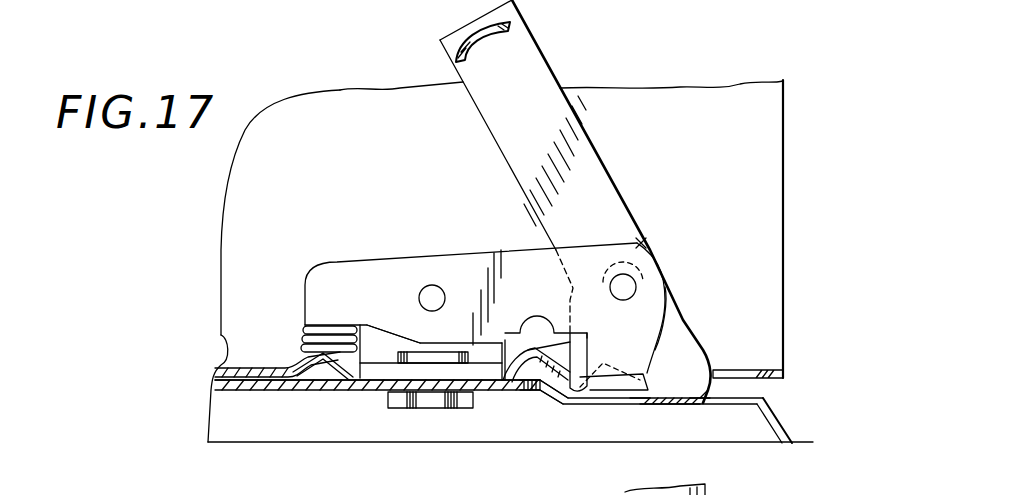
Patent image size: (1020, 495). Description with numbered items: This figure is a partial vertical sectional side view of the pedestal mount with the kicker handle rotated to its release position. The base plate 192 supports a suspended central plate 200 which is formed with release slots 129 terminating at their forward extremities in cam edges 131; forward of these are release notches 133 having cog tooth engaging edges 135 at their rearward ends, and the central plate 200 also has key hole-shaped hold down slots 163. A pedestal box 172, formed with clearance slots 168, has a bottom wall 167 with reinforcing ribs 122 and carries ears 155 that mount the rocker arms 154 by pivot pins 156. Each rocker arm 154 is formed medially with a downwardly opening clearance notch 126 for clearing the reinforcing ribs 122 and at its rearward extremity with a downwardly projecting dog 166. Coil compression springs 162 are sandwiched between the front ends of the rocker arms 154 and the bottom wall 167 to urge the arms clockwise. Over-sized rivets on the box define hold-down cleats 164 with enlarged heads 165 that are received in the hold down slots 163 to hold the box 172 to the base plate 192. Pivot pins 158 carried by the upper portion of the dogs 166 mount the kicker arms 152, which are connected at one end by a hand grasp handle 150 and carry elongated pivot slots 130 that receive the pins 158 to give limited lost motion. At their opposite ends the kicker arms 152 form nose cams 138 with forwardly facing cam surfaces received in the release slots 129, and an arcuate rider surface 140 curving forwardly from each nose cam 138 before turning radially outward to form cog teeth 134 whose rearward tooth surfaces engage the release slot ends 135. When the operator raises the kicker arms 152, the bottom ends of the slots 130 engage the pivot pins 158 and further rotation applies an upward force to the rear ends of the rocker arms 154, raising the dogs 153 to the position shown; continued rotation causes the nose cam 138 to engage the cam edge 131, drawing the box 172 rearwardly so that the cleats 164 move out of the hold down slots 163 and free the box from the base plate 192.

The reinforcing ribs 122 is at (577, 348).
The clearance notches 126 is at (537, 316).
The release slots 129 is at (790, 422).
The elongated pivot slots 130 is at (641, 242).
The cam edges 131 is at (700, 405).
The release notches 133 is at (593, 400).
The cog teeth 134 is at (556, 399).
The cog tooth engaging edges 135 is at (640, 405).
The nose cams 138 is at (699, 403).
The arcuate rider surface 140 is at (652, 397).
The hand grasp handle 150 is at (478, 25).
The kicker arms 152 is at (575, 38).
The dogs 153 is at (667, 308).
The rocker arms 154 is at (427, 245).
The ears 155 is at (372, 328).
The pivot pins 156 is at (421, 292).
The pivot pins 158 is at (636, 285).
The coil compression springs 162 is at (308, 354).
The hold down slots 163 is at (507, 391).
The hold-down cleats 164 is at (378, 398).
The enlarged heads 165 is at (407, 409).
The dogs 166 is at (643, 378).
The bottom wall 167 is at (221, 347).
The clearance slots 168 is at (778, 368).
The pedestal box 172 is at (835, 140).
The base plate 192 is at (297, 390).
The suspended central plate 200 is at (221, 400).